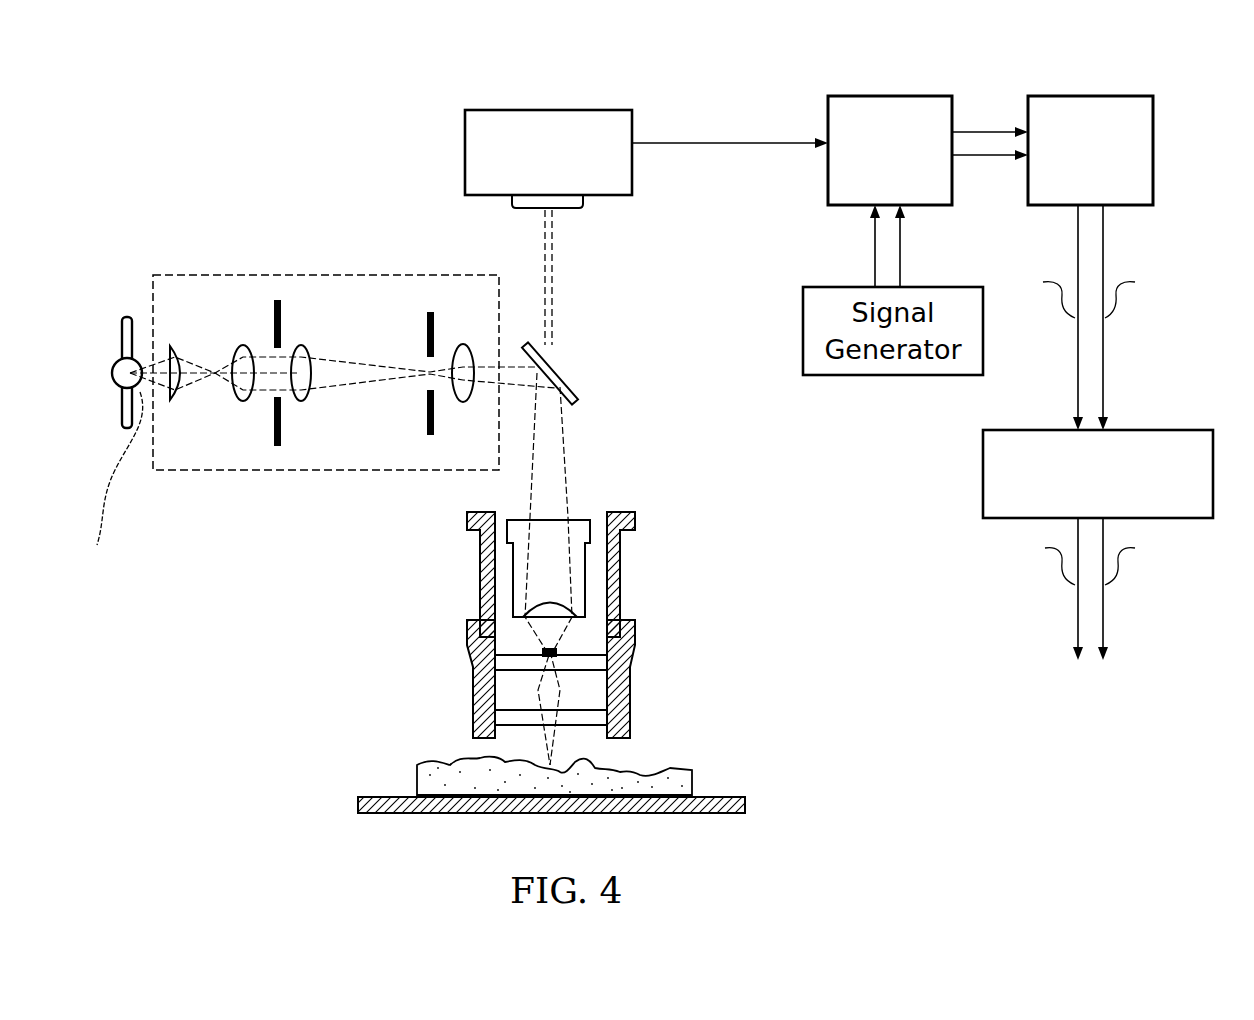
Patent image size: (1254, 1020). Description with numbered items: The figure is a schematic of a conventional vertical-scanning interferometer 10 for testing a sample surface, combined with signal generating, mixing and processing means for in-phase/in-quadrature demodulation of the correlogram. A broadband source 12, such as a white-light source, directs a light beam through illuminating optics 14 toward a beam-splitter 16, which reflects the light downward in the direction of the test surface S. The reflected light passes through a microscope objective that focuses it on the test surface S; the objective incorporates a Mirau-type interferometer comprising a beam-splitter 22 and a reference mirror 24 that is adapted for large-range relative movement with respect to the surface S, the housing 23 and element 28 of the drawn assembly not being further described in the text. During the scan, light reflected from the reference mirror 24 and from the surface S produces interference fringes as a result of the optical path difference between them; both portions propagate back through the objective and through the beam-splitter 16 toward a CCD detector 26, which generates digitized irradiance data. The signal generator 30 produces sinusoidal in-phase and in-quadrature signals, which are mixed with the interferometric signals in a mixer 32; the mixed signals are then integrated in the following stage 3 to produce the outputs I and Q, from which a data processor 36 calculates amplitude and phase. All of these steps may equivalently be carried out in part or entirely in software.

The interferometer 10 is at (690, 397).
The broadband source 12 is at (125, 315).
The illuminating optics 14 is at (298, 277).
The beam-splitter 16 is at (580, 397).
The beam-splitter 22 is at (620, 542).
The lower housing 23 is at (460, 704).
The reference mirror 24 is at (590, 710).
The CCD detector 26 is at (557, 653).
The detector aperture 28 is at (575, 210).
The signal generator 30 is at (607, 122).
The mixer 32 is at (875, 110).
The converter 3 is at (1067, 110).
The data processor 36 is at (1180, 430).
The test surface S is at (683, 792).